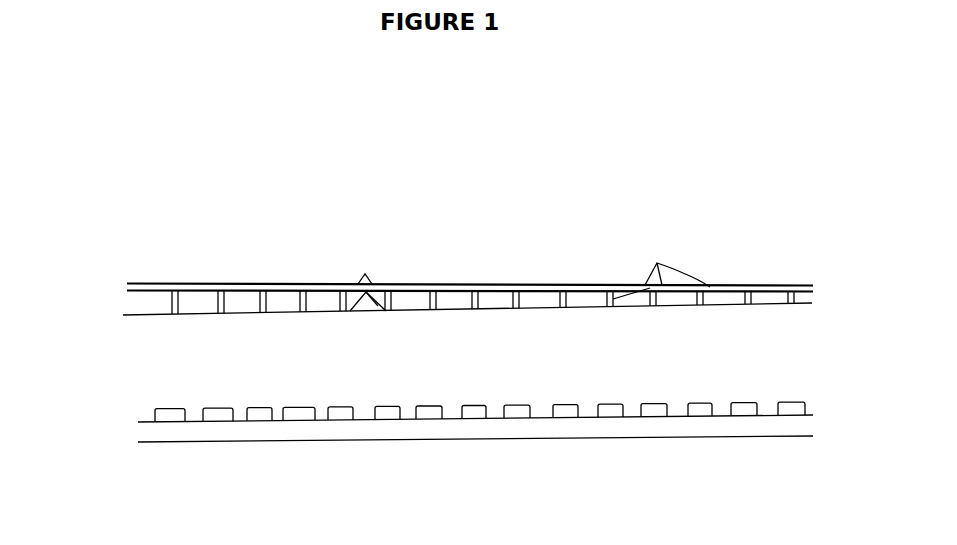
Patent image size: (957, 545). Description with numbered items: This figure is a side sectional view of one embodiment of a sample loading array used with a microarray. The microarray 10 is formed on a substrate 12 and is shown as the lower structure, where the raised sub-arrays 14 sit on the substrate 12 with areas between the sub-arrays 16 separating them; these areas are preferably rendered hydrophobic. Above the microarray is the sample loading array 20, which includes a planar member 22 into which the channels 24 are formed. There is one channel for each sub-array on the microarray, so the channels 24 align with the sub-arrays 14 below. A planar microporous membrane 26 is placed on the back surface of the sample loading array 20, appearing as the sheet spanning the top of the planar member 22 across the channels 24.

The microarray 10 is at (130, 449).
The substrate 12 is at (752, 425).
The sub-arrays 14 is at (558, 422).
The areas between the sub-arrays 16 is at (408, 423).
The sample loading array 20 is at (118, 298).
The planar member 22 is at (152, 305).
The channels 24 is at (365, 278).
The planar microporous membrane 26 is at (452, 283).